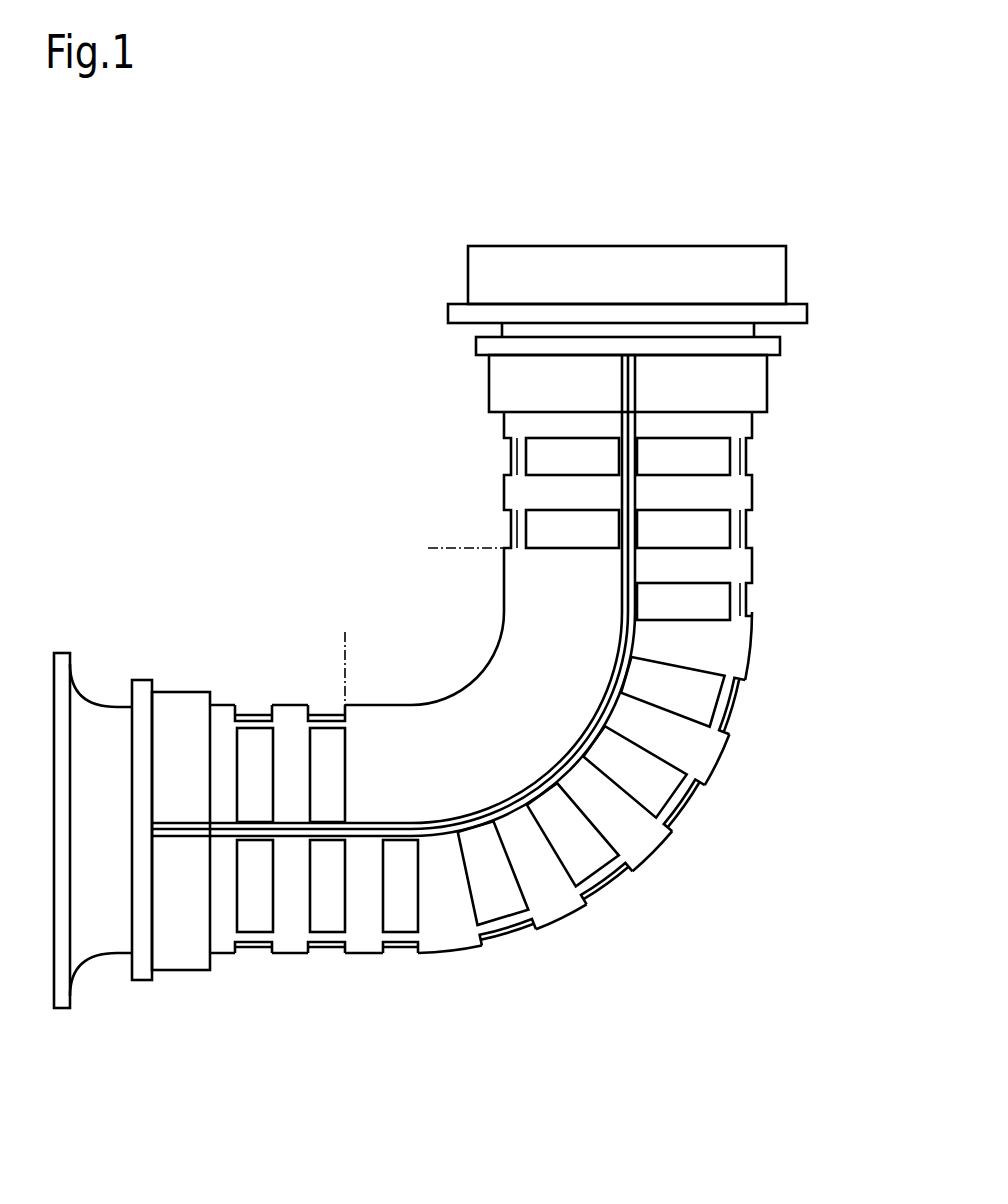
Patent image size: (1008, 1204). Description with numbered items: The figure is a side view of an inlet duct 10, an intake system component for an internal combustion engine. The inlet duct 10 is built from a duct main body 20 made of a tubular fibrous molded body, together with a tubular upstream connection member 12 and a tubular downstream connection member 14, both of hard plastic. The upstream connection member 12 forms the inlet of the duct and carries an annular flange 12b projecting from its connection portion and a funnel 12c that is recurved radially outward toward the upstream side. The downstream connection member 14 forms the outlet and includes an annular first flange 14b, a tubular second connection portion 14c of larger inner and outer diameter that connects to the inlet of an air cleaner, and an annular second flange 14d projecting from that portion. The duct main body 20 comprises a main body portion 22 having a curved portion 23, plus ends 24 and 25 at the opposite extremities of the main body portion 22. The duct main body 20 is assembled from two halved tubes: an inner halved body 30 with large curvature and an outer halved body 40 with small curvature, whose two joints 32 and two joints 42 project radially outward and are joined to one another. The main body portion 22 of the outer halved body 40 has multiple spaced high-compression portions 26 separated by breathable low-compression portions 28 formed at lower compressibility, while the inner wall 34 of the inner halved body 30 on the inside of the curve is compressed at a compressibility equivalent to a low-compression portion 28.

The inlet duct 10 is at (153, 315).
The upstream connection member 12 is at (90, 665).
The flange 12b is at (147, 982).
The funnel 12c is at (80, 977).
The downstream connection member 14 is at (450, 262).
The first flange 14b is at (782, 344).
The second connection portion 14c is at (787, 262).
The second flange 14d is at (808, 308).
The duct main body 20 is at (647, 877).
The main body portion 22 is at (510, 450).
The curved portion 23 is at (572, 913).
The end 24 is at (175, 692).
The end 25 is at (488, 375).
The high-compression portion 26 is at (260, 753).
The low-compression portion 28 is at (290, 708).
The inner halved body 30 is at (326, 706).
The joint 32 is at (183, 821).
The inner wall 34 is at (457, 549).
The outer halved body 40 is at (515, 933).
The joint 42 is at (183, 838).